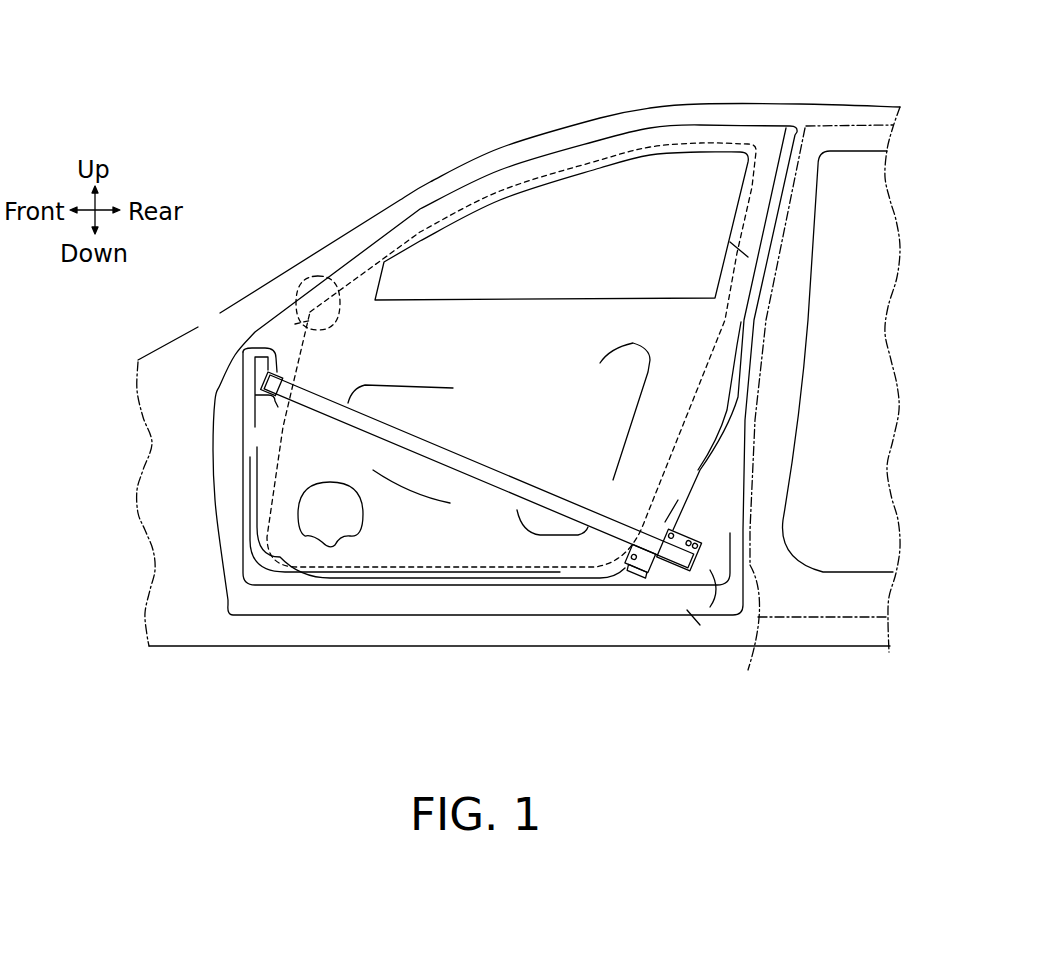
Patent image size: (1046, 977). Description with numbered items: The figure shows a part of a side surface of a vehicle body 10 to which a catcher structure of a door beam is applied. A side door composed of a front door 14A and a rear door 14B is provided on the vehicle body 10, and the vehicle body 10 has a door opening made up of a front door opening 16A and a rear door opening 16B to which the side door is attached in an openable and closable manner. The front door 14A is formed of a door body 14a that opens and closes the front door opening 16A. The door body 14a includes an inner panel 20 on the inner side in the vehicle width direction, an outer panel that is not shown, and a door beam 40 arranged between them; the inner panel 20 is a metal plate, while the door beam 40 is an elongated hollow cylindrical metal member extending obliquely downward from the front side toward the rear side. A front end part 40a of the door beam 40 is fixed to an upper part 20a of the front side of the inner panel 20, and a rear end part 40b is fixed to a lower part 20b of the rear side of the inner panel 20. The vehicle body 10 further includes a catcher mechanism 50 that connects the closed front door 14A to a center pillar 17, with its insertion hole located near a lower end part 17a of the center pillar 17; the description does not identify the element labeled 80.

The vehicle body 10 is at (415, 162).
The front door 14A is at (399, 624).
The door body 14a is at (501, 607).
The rear door 14B is at (821, 625).
The front door opening 16A is at (320, 282).
The rear door opening 16B is at (805, 238).
The center pillar 17 is at (748, 257).
The lower end part of the center pillar 17a is at (756, 633).
The inner panel 20 is at (570, 343).
The upper part of the front side of the inner panel 20a is at (278, 336).
The lower part of the rear side of the inner panel 20b is at (710, 607).
The door beam 40 is at (445, 478).
The front end part of the door beam 40a is at (268, 332).
The rear end part of the door beam 40b is at (682, 565).
The catcher mechanism 50 is at (700, 527).
The fastening member 80 is at (643, 577).